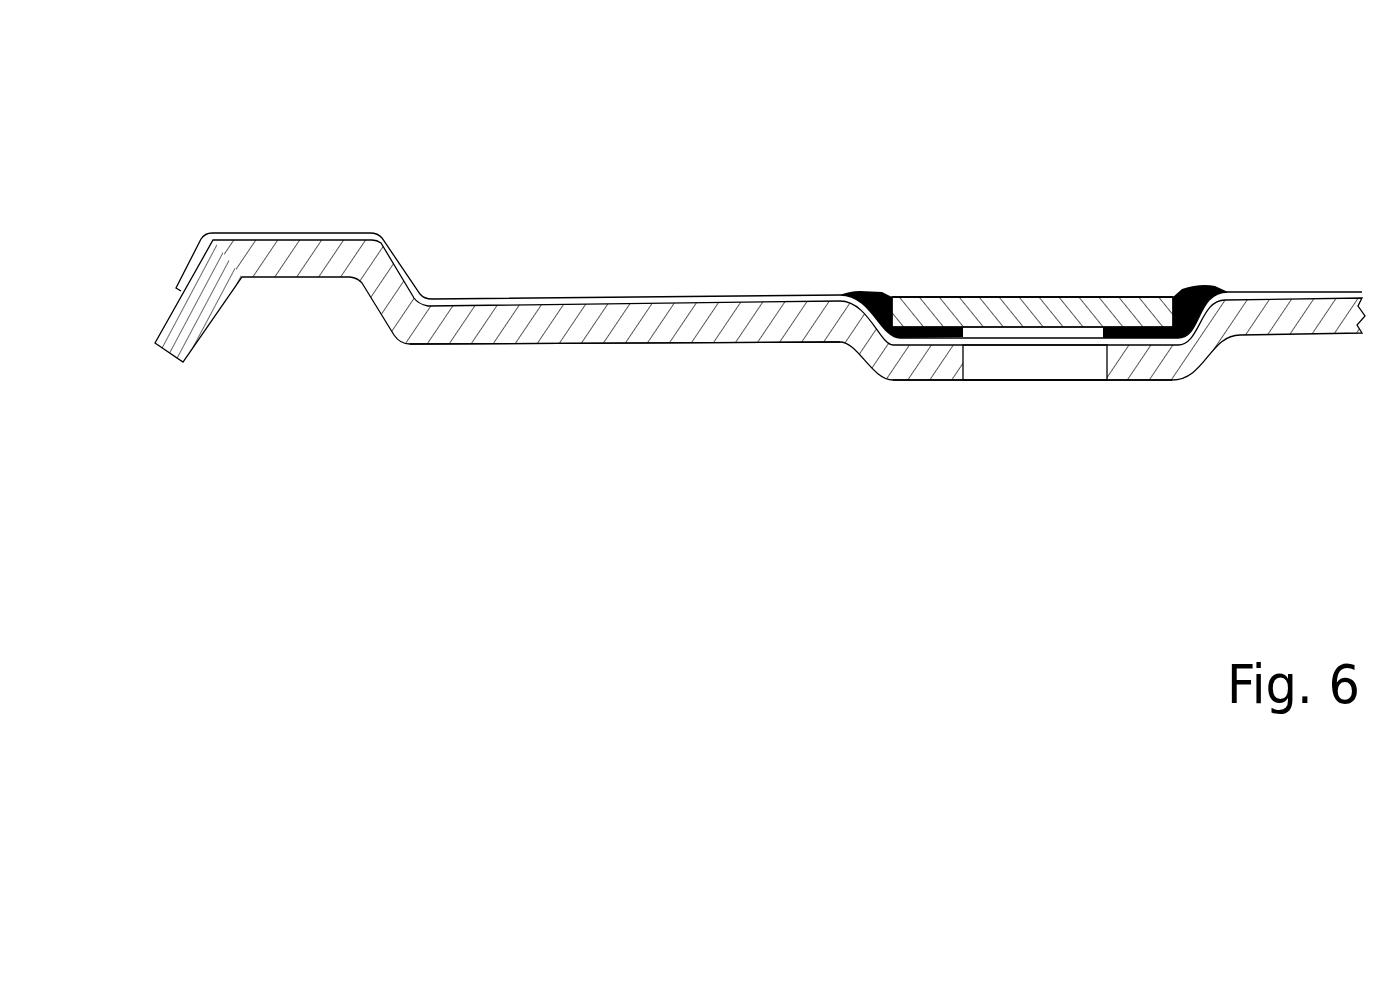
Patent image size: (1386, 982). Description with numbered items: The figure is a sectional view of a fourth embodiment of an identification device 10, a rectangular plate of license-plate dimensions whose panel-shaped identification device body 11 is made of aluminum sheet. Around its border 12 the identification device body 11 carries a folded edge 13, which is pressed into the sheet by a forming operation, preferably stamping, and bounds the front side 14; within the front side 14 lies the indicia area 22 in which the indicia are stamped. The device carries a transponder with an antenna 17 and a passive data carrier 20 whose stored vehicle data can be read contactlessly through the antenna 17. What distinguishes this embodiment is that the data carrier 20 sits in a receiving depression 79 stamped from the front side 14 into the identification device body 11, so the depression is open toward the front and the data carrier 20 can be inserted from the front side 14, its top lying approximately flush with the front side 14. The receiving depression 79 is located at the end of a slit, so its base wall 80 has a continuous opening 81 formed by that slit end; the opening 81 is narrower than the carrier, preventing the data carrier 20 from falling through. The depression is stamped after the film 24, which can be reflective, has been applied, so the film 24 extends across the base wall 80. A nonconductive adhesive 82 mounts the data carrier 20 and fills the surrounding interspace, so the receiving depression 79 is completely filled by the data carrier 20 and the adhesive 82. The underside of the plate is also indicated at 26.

The identification device 10 is at (663, 170).
The identification device body 11 is at (387, 288).
The border 12 is at (163, 355).
The folded edge 13 is at (298, 257).
The front side 14 is at (857, 260).
The antenna 17 is at (918, 277).
The data carrier 20 is at (1036, 308).
The indicia area 22 is at (750, 318).
The film 24 is at (1292, 295).
The underside of plate 26 is at (748, 377).
The receiving depression 79 is at (1148, 385).
The base wall 80 is at (923, 360).
The continuous opening 81 is at (1052, 362).
The adhesive 82 is at (1185, 292).